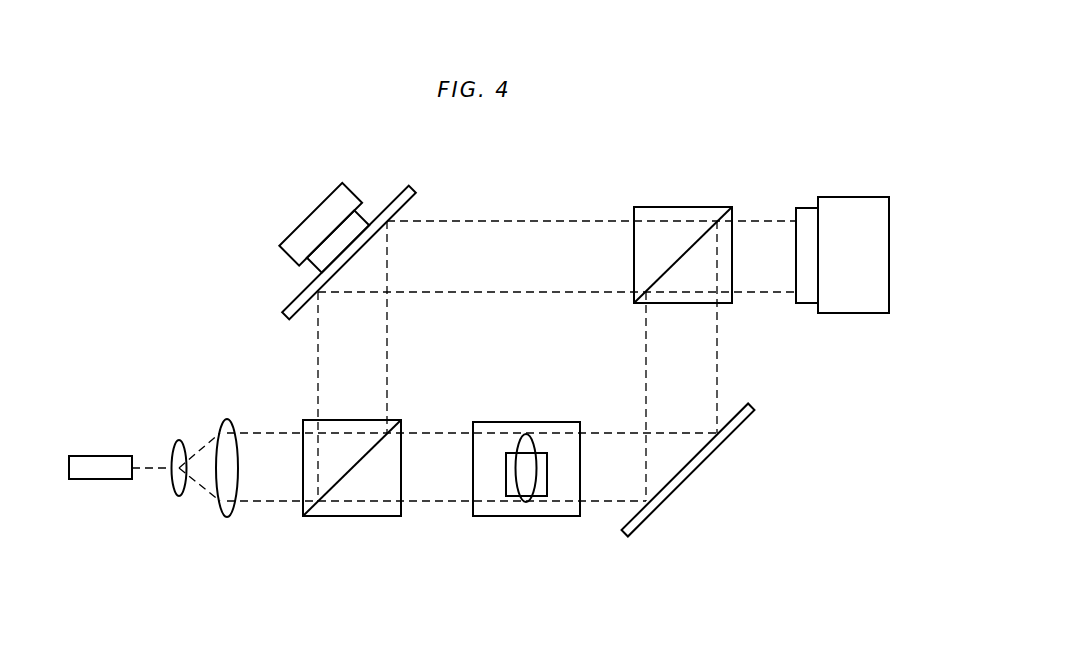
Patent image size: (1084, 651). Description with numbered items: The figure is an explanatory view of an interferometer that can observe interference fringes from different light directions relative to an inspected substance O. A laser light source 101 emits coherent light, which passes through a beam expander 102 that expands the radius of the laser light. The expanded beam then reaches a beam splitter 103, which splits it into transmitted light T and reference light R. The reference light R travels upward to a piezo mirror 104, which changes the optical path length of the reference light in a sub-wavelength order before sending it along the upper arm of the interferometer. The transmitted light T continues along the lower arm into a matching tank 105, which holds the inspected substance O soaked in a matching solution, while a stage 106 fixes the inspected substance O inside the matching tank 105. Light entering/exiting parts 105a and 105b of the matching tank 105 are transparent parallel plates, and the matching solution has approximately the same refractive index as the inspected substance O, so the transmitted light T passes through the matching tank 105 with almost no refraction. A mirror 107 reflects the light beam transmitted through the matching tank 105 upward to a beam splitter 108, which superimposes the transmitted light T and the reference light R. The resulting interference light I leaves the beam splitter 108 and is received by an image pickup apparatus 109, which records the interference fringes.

The laser light source 101 is at (100, 455).
The beam expander 102 is at (228, 518).
The beam splitter 103 is at (362, 518).
The piezo mirror 104 is at (312, 210).
The matching tank 105 is at (555, 512).
The light entering/exiting part 105a is at (472, 492).
The light entering/exiting part 105b is at (580, 480).
The stage 106 is at (513, 497).
The mirror 107 is at (690, 476).
The beam splitter 108 is at (695, 205).
The image pickup apparatus 109 is at (852, 313).
The reference light R is at (493, 245).
The transmitted light T is at (429, 480).
The inspected substance O is at (528, 434).
The interference light I is at (765, 245).